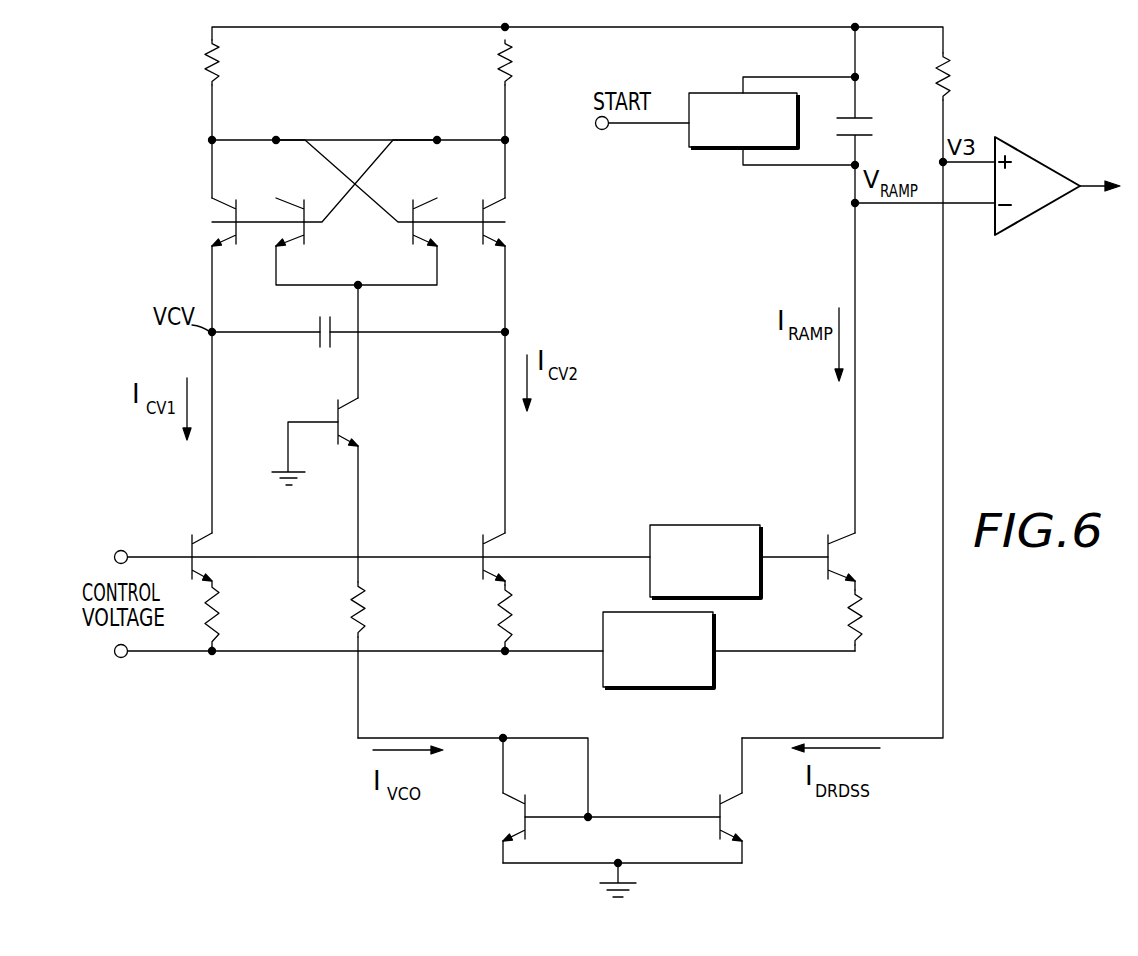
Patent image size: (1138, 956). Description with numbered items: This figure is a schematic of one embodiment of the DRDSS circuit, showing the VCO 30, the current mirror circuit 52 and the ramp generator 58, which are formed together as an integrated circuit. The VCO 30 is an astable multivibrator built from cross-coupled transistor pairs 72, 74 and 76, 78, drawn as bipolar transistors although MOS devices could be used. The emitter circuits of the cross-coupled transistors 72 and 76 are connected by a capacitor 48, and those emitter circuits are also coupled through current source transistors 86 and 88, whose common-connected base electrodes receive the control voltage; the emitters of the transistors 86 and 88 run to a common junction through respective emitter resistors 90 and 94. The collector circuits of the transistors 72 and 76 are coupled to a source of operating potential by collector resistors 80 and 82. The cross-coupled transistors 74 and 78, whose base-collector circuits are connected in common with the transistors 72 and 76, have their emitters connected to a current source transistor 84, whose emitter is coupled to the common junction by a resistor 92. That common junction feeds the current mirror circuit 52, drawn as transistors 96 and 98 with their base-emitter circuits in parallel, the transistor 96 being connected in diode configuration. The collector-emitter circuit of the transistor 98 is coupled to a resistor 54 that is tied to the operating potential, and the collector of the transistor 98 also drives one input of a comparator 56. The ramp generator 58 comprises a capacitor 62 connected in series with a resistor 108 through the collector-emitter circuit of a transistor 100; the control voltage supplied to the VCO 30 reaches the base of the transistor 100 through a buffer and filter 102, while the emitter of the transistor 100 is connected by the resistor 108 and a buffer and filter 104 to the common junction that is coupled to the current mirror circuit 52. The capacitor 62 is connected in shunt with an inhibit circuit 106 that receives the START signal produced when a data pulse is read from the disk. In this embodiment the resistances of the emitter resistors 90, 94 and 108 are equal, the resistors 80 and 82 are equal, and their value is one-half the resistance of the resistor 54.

The VCO 30 is at (371, 274).
The capacitor 48 is at (324, 346).
The current mirror circuit 52 is at (674, 779).
The resistor 54 is at (948, 94).
The comparator 56 is at (1060, 154).
The ramp generator 58 is at (888, 279).
The capacitor 62 is at (872, 128).
The cross-coupled transistor 72 is at (225, 213).
The cross-coupled transistor 74 is at (282, 207).
The cross-coupled transistor 76 is at (497, 218).
The cross-coupled transistor 78 is at (423, 206).
The collector resistor 80 is at (217, 78).
The collector resistor 82 is at (500, 68).
The current source transistor 84 is at (353, 421).
The current source transistor 86 is at (210, 545).
The current source transistor 88 is at (500, 545).
The emitter resistor 90 is at (222, 620).
The resistor 92 is at (362, 618).
The emitter resistor 94 is at (526, 601).
The transistor 96 is at (512, 800).
The transistor 98 is at (734, 816).
The transistor 100 is at (846, 555).
The buffer and filter 102 is at (717, 526).
The buffer and filter 104 is at (716, 662).
The inhibit circuit 106 is at (715, 150).
The resistor 108 is at (862, 620).